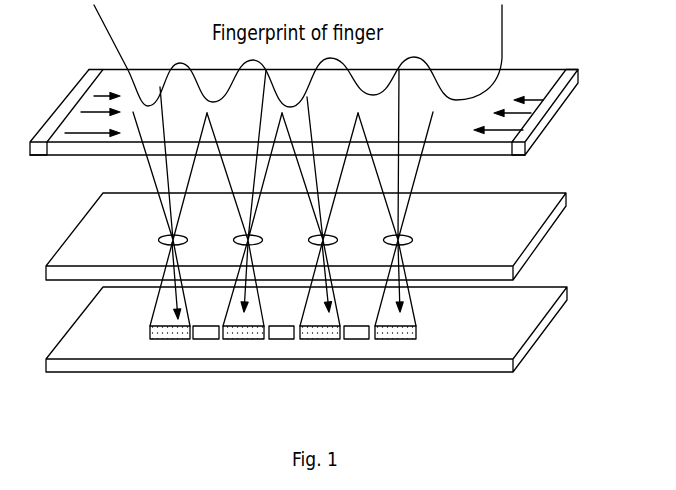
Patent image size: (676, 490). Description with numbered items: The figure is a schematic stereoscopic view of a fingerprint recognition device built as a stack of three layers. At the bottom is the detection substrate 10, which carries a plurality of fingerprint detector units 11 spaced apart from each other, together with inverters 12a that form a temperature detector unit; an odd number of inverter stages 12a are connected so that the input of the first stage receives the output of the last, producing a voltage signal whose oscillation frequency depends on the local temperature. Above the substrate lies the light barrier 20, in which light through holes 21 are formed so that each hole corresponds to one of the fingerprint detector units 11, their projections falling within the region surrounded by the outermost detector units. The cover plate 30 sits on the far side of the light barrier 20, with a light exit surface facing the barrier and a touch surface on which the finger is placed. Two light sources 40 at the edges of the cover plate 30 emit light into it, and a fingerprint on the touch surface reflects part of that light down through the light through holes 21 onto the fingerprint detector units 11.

The detection substrate 10 is at (533, 345).
The fingerprint detector unit 11 is at (400, 340).
The inverter 12a is at (208, 340).
The light barrier 20 is at (547, 232).
The light through hole 21 is at (159, 240).
The cover plate 30 is at (531, 70).
The light source 40 is at (62, 103).